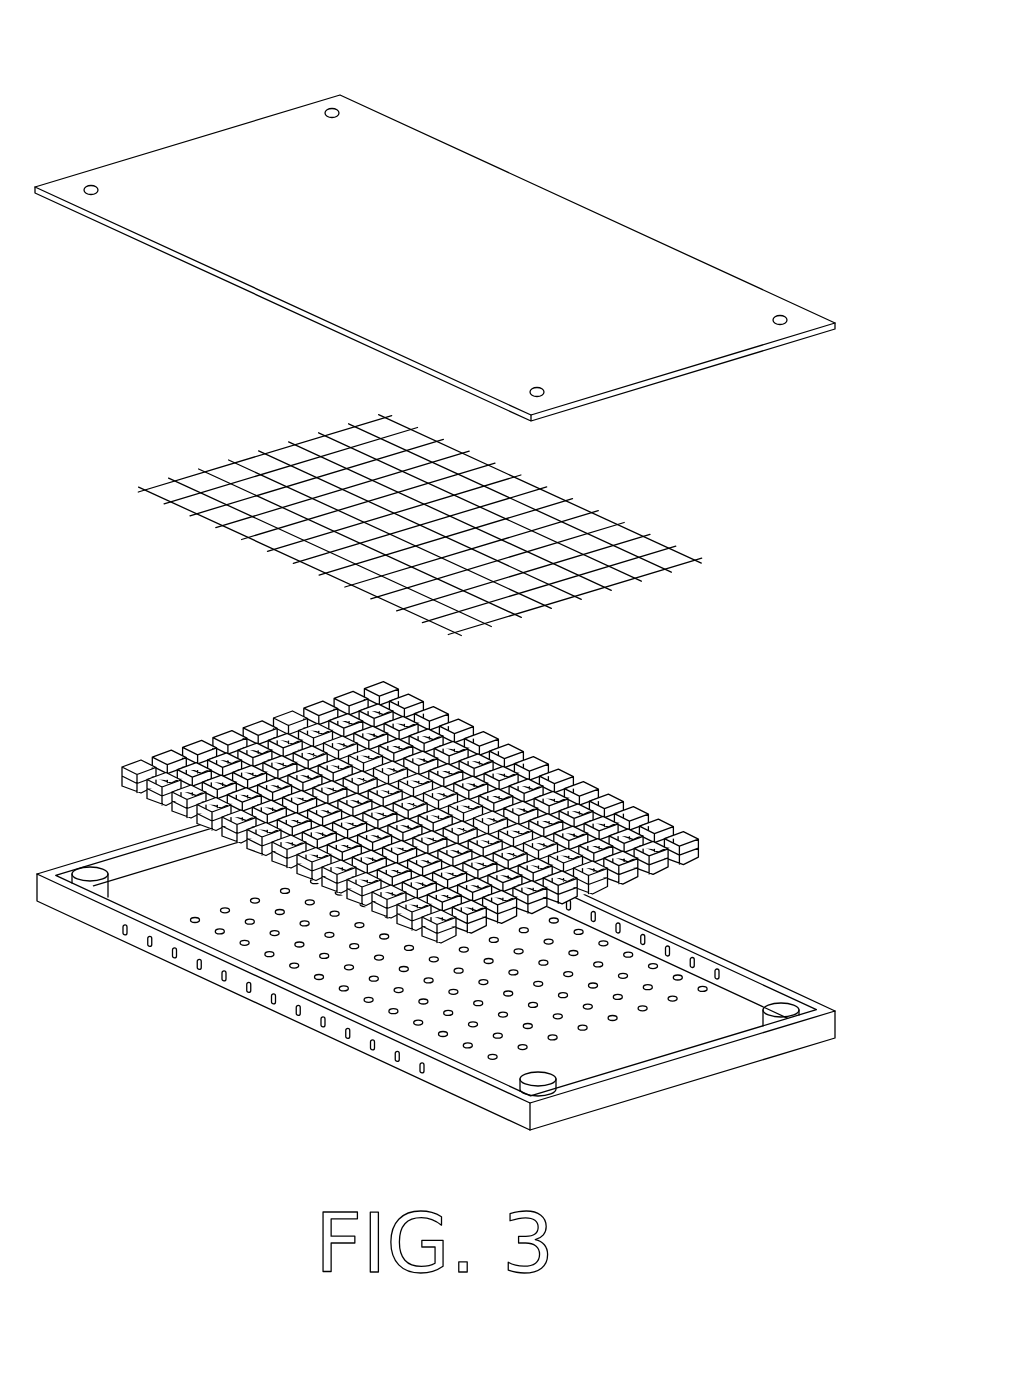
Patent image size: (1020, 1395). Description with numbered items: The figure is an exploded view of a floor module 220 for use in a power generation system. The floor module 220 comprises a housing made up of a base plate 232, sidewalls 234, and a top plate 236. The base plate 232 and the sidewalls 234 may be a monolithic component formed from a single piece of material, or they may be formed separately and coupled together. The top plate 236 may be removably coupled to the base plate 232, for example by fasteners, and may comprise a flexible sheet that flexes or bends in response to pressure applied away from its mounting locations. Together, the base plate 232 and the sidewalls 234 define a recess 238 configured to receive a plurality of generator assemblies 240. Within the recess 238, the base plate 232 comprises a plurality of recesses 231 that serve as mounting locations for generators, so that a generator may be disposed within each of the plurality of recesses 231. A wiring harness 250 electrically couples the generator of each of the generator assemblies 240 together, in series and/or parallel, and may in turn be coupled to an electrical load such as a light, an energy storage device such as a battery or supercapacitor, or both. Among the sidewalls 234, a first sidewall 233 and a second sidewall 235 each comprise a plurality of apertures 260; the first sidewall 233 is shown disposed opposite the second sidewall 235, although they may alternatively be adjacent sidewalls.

The floor module 220 is at (217, 90).
The top plate 236 is at (458, 303).
The wiring harness 250 is at (252, 442).
The plurality of generator assemblies 240 is at (254, 724).
The second sidewall 235 is at (693, 942).
The recess 238 is at (715, 1015).
The plurality of recesses 231 is at (338, 993).
The base plate 232 is at (92, 883).
The first sidewall 233 is at (458, 1100).
The sidewalls 234 is at (717, 1048).
The plurality of apertures 260 is at (412, 1079).